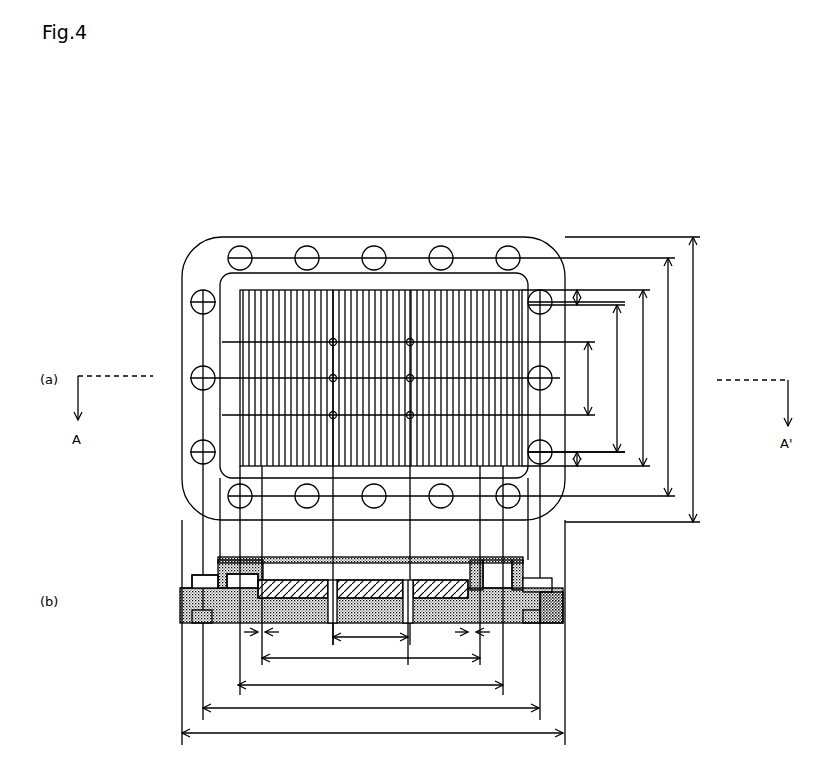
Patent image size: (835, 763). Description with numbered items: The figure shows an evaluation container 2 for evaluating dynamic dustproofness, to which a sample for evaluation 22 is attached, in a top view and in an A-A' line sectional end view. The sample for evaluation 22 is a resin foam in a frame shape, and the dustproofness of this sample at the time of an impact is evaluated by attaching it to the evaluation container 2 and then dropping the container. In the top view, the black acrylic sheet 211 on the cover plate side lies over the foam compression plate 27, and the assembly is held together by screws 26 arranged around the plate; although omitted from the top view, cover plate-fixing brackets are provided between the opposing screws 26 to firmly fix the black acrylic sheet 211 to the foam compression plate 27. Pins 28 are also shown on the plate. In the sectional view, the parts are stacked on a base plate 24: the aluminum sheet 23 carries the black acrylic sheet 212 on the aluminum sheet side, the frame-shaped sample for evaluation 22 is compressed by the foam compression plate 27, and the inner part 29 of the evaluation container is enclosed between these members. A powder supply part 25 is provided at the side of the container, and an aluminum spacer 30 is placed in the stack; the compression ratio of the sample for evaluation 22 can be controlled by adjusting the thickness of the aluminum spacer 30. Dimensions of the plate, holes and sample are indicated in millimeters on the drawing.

The evaluation container 2 is at (389, 183).
The sample for evaluation 22 is at (435, 315).
The aluminum sheet 23 is at (358, 580).
The base plate 24 is at (228, 624).
The powder supply part 25 is at (248, 578).
The screw 26 is at (191, 462).
The foam compression plate 27 is at (492, 246).
The pin 28 is at (333, 377).
The inner part of the evaluation container 29 is at (325, 580).
The aluminum spacer 30 is at (492, 628).
The black acrylic sheet 211 is at (250, 348).
The black acrylic sheet 212 is at (380, 580).